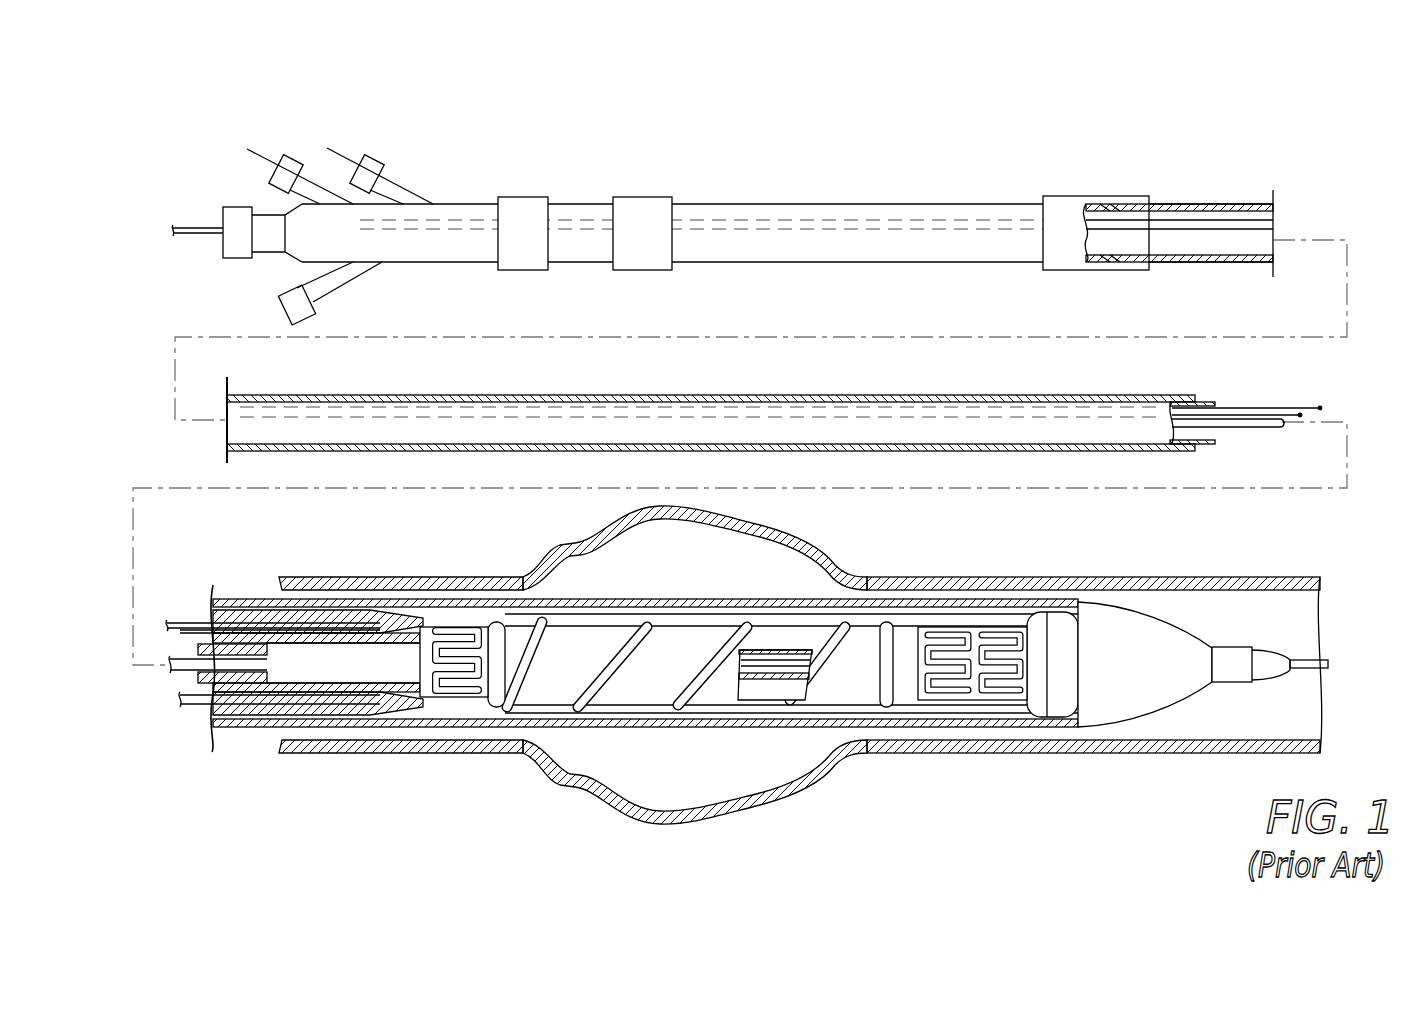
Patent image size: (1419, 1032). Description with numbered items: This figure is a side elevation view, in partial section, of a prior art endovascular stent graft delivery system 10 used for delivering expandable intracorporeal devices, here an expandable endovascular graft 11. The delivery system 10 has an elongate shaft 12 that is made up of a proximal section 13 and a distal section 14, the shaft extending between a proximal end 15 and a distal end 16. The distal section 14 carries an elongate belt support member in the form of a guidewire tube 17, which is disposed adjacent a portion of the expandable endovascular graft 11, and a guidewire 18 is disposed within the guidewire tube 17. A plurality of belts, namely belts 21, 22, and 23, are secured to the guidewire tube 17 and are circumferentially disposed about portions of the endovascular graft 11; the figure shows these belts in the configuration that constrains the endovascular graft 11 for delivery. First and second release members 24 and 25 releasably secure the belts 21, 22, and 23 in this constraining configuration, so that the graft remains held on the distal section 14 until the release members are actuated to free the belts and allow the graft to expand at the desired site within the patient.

The delivery system 10 is at (680, 138).
The expandable endovascular graft 11 is at (678, 628).
The elongate shaft 12 is at (770, 394).
The proximal section 13 is at (860, 203).
The distal section 14 is at (490, 738).
The proximal end 15 is at (516, 197).
The distal end 16 is at (1240, 682).
The guidewire tube 17 is at (765, 650).
The guidewire 18 is at (1327, 659).
The belt 21 is at (1002, 612).
The belt 22 is at (947, 612).
The belt 23 is at (460, 622).
The first release member 24 is at (423, 622).
The second release member 25 is at (382, 632).